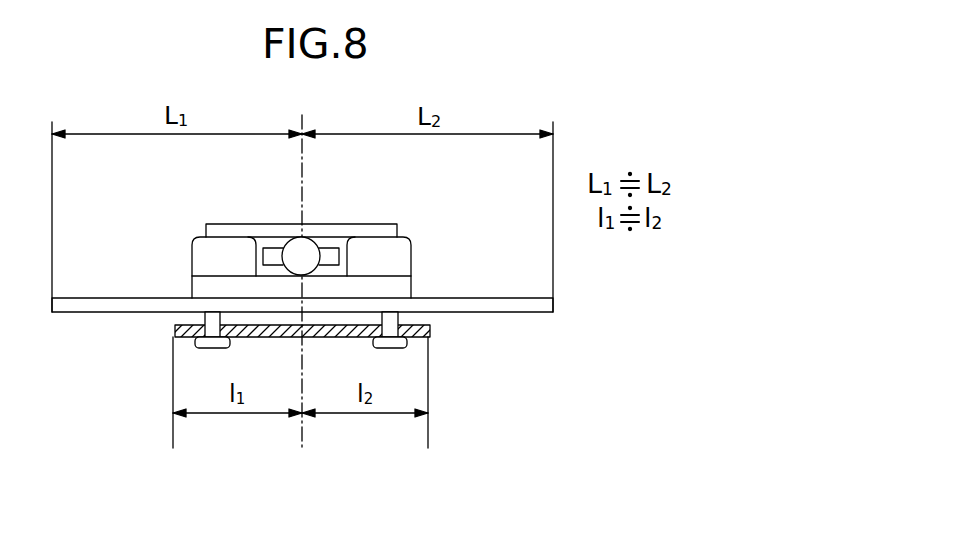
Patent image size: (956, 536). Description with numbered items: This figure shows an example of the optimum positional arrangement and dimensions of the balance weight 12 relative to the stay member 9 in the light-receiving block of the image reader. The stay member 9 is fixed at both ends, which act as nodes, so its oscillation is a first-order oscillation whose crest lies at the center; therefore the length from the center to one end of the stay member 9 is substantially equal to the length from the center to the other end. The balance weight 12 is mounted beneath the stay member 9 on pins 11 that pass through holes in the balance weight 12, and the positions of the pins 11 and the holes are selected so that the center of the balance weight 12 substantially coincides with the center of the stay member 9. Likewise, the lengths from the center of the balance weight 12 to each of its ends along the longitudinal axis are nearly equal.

The stay member 9 is at (493, 298).
The pins 11 is at (208, 347).
The balance weight 12 is at (329, 337).